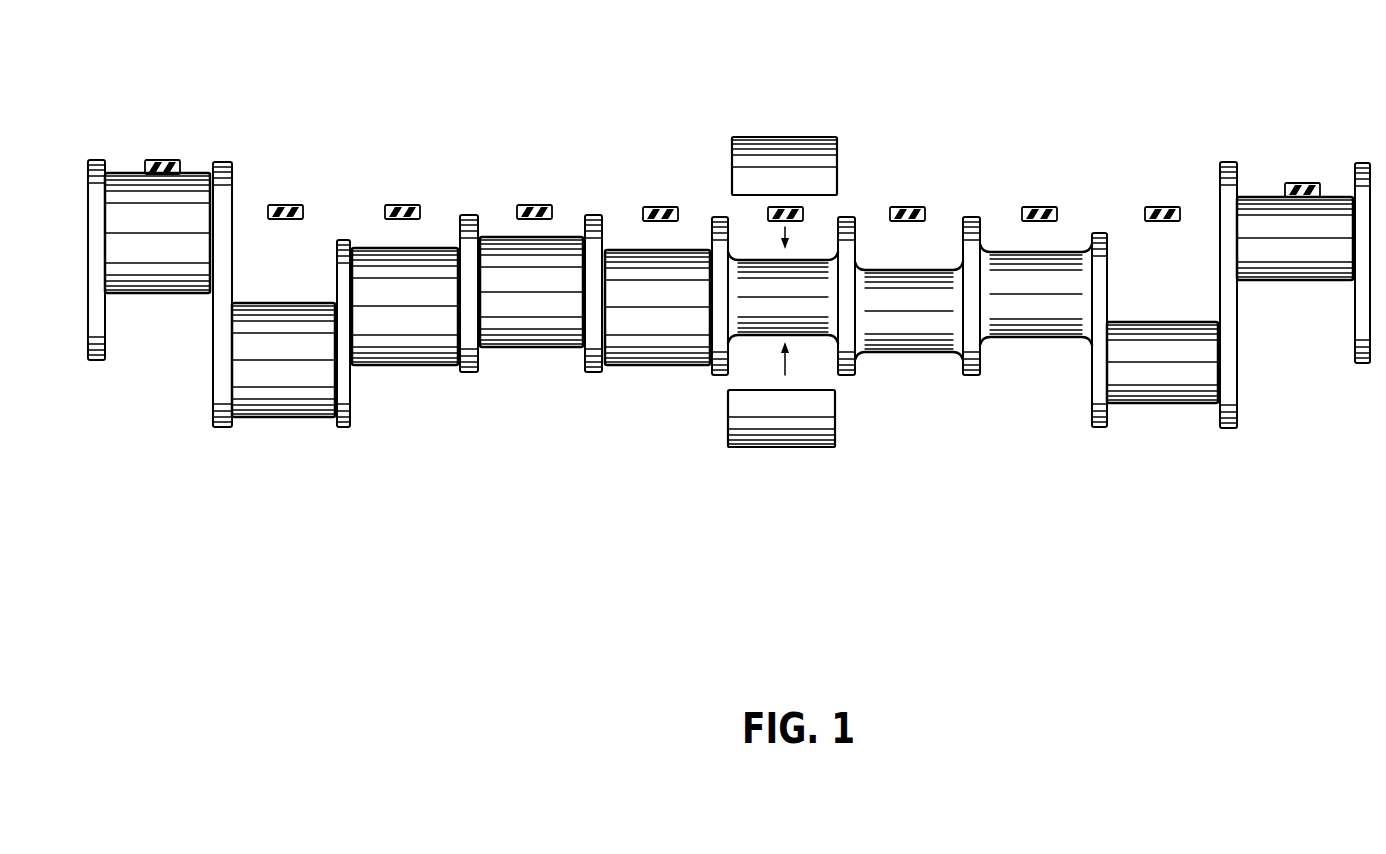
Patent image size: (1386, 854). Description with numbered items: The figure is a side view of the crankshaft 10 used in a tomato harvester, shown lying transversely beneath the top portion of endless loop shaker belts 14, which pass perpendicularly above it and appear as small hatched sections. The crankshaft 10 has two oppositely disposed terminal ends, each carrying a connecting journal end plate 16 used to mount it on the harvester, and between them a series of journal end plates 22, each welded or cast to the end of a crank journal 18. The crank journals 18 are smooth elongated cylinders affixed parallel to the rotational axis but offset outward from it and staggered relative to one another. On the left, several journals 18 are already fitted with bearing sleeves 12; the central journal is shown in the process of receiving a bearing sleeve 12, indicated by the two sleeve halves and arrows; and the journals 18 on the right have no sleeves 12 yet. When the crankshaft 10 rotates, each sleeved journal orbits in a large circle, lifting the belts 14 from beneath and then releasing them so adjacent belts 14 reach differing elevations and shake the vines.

The crankshaft 10 is at (1048, 465).
The bearing sleeve 12 is at (783, 138).
The shaker belt 14 is at (160, 160).
The connecting journal end plate 16 is at (94, 362).
The crank journal 18 is at (906, 352).
The journal end plate 22 is at (472, 217).